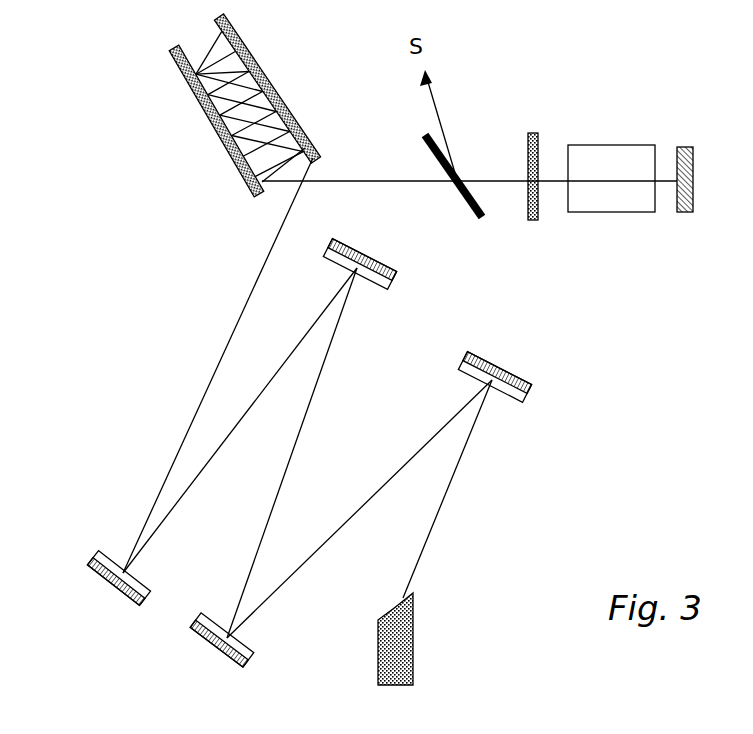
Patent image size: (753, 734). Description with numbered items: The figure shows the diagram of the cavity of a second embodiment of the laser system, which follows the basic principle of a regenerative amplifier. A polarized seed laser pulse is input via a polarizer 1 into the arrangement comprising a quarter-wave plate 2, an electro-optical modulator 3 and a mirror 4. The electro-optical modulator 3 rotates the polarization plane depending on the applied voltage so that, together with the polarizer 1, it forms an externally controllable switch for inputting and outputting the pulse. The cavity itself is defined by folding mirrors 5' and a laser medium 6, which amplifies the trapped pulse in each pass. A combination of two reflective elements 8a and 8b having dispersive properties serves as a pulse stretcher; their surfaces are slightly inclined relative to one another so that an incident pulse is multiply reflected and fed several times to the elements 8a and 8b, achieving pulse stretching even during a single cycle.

The polarizer 1 is at (491, 200).
The quarter-wave plate 2 is at (574, 144).
The electro-optical modulator 3 is at (639, 158).
The mirror 4 is at (636, 230).
The folding mirror 5' is at (327, 482).
The laser medium 6 is at (436, 639).
The reflective element having dispersive properties 8a is at (215, 124).
The reflective element having dispersive properties 8b is at (302, 88).